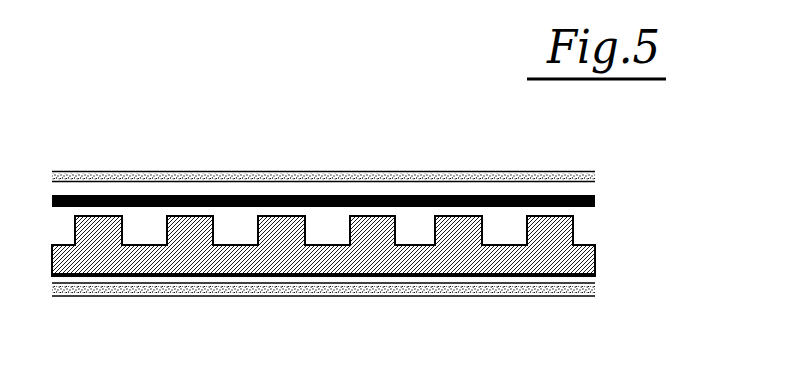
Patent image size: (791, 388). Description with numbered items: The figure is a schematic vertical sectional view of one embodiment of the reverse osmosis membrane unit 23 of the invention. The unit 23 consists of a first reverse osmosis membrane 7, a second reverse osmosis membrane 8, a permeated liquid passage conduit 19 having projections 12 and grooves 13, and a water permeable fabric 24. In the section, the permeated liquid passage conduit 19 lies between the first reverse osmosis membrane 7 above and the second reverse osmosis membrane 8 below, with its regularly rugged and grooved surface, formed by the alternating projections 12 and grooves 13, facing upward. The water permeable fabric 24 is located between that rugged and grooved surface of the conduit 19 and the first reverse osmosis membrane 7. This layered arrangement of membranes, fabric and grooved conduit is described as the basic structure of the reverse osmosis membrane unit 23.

The first reverse osmosis membrane 7 is at (451, 173).
The second reverse osmosis membrane 8 is at (523, 297).
The projections 12 is at (370, 222).
The grooves 13 is at (328, 235).
The permeated liquid passage conduit 19 is at (235, 260).
The reverse osmosis membrane unit 23 is at (352, 276).
The water permeable fabric 24 is at (263, 196).